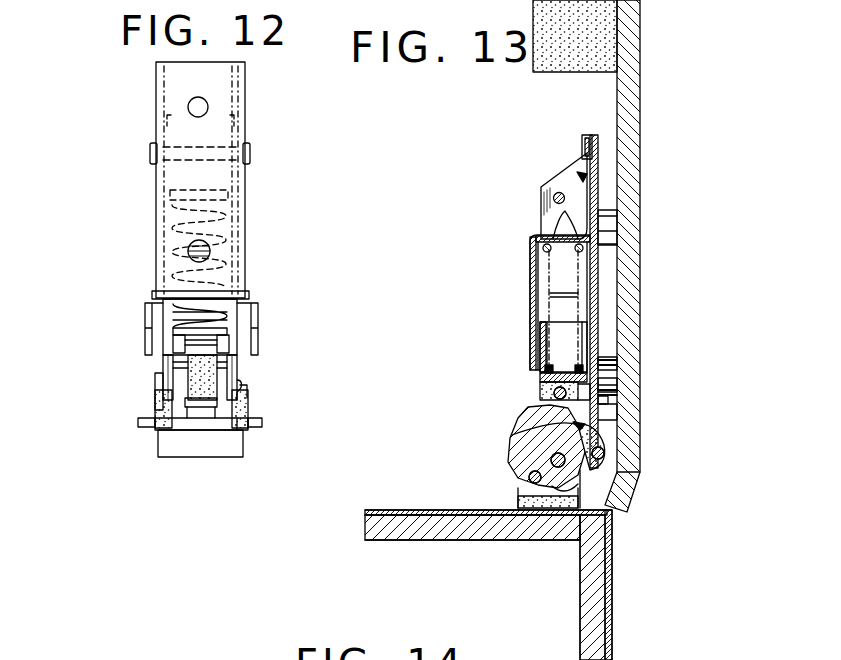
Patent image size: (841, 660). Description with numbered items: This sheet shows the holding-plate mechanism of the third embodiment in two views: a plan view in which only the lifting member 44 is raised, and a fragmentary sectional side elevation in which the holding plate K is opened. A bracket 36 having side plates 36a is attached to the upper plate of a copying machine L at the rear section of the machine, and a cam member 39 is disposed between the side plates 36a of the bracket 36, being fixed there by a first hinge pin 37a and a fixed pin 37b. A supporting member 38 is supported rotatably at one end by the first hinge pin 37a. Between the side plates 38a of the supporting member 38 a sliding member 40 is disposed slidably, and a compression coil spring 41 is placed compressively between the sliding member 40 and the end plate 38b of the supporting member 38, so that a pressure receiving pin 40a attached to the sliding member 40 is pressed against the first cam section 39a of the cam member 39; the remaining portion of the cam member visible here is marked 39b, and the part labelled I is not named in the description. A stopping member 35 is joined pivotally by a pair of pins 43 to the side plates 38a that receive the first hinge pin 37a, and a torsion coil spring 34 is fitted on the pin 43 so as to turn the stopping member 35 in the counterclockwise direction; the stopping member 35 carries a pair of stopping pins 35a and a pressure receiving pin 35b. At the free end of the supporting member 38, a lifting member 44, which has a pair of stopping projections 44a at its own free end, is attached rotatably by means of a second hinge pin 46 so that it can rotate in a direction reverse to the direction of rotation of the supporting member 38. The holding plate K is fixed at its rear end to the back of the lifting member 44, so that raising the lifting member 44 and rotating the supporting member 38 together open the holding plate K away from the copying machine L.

In FIG. 13, the holding plate K is at (640, 62).
In FIG. 13, the copying machine L is at (620, 588).
In FIG. 13, the floor plate I is at (470, 541).
In FIG. 12, the torsion coil spring 34 is at (218, 388).
In FIG. 13, the torsion coil spring 34 is at (628, 408).
In FIG. 12, the stopping member 35 is at (207, 435).
In FIG. 13, the stopping member 35 is at (635, 440).
In FIG. 12, the stopping pins 35a is at (143, 425).
In FIG. 13, the stopping pins 35a is at (635, 463).
In FIG. 12, the pressure receiving pin 35b is at (198, 428).
In FIG. 13, the pressure receiving pin 35b is at (633, 430).
In FIG. 12, the bracket 36 is at (245, 450).
In FIG. 13, the bracket 36 is at (620, 493).
In FIG. 12, the side plates 36a is at (160, 402).
In FIG. 13, the side plates 36a is at (518, 498).
In FIG. 13, the first hinge pin 37a is at (540, 420).
In FIG. 13, the fixed pin 37b is at (528, 450).
In FIG. 12, the supporting member 38 is at (158, 303).
In FIG. 13, the supporting member 38 is at (522, 266).
In FIG. 12, the side plates 38a is at (178, 371).
In FIG. 12, the end plate 38b is at (248, 172).
In FIG. 13, the end plate 38b is at (636, 220).
In FIG. 12, the cam member 39 is at (163, 365).
In FIG. 13, the cam member 39 is at (538, 392).
In FIG. 12, the first cam section 39a is at (240, 383).
In FIG. 13, the first cam section 39a is at (548, 385).
In FIG. 12, the side frame lug 39b is at (210, 430).
In FIG. 13, the side frame lug 39b is at (633, 396).
In FIG. 12, the sliding member 40 is at (235, 340).
In FIG. 13, the sliding member 40 is at (566, 367).
In FIG. 12, the pressure receiving pin 40a is at (230, 350).
In FIG. 13, the pressure receiving pin 40a is at (635, 372).
In FIG. 12, the compression coil spring 41 is at (252, 286).
In FIG. 13, the compression coil spring 41 is at (536, 233).
In FIG. 12, the pins 43 is at (160, 391).
In FIG. 12, the lifting member 44 is at (225, 227).
In FIG. 13, the lifting member 44 is at (640, 268).
In FIG. 12, the stopping projections 44a is at (140, 332).
In FIG. 13, the stopping projections 44a is at (620, 467).
In FIG. 12, the second hinge pin 46 is at (150, 150).
In FIG. 13, the second hinge pin 46 is at (541, 187).